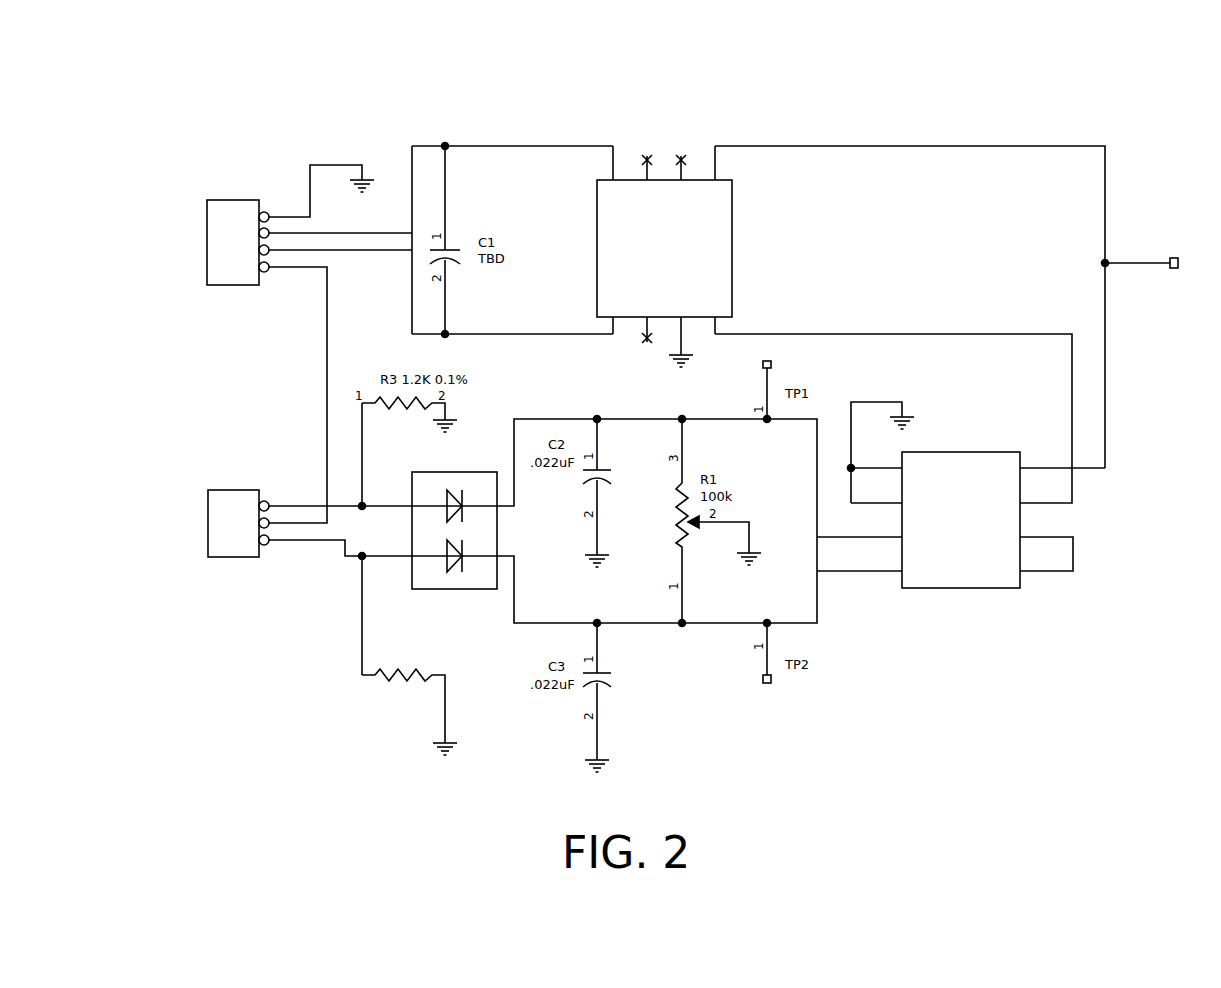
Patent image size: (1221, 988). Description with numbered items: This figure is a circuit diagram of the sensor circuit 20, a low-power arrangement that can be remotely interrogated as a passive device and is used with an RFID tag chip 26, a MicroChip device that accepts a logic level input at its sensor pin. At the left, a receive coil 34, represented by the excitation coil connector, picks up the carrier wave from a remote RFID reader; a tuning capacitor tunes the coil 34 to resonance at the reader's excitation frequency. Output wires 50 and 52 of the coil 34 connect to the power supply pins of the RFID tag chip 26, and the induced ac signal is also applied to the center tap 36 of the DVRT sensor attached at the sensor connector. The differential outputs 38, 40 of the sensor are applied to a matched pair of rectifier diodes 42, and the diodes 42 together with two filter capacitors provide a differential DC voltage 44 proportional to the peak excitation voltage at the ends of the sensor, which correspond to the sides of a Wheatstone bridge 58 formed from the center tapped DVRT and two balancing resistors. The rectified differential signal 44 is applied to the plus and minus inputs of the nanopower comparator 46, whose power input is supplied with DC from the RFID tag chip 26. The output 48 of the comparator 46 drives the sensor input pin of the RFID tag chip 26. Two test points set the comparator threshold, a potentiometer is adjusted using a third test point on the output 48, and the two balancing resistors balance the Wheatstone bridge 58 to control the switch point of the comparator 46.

The circuit 20 is at (747, 128).
The RFID tag chip 26 is at (703, 256).
The coil 34 is at (243, 200).
The center tap 36 is at (290, 523).
The differential output 38 is at (293, 506).
The differential output 40 is at (277, 543).
The rectifier diodes 42 is at (448, 487).
The differential DC voltage 44 is at (867, 571).
The comparator 46 is at (961, 490).
The output 48 is at (1057, 468).
The output wire 50 is at (528, 146).
The output wire 52 is at (523, 334).
The Wheatstone bridge 58 is at (317, 672).